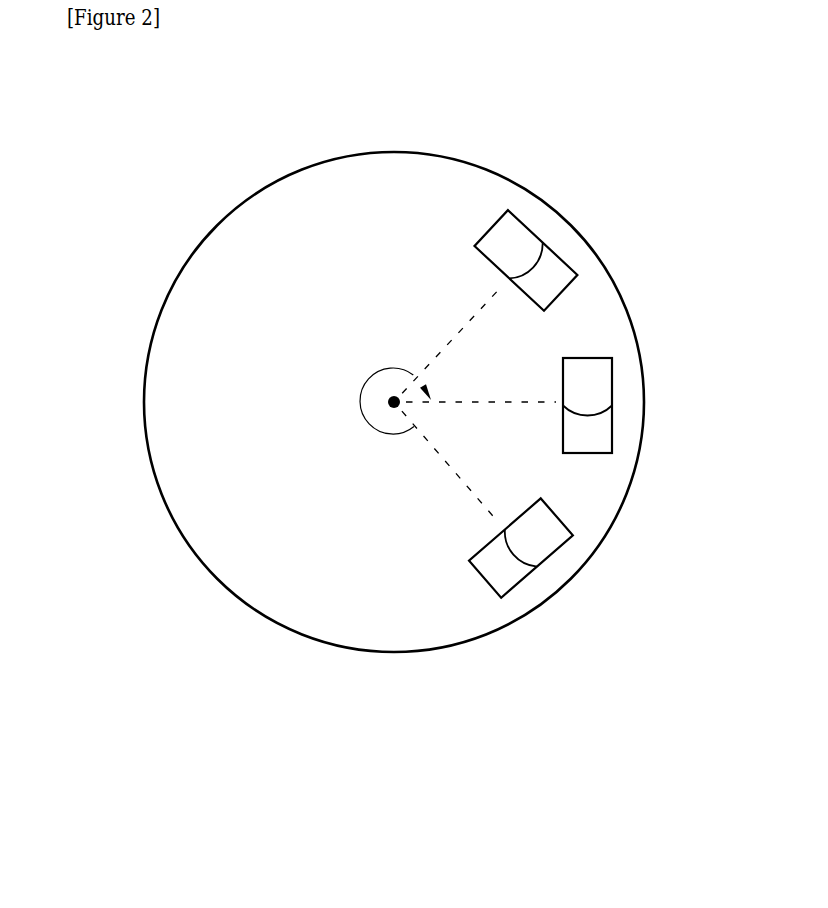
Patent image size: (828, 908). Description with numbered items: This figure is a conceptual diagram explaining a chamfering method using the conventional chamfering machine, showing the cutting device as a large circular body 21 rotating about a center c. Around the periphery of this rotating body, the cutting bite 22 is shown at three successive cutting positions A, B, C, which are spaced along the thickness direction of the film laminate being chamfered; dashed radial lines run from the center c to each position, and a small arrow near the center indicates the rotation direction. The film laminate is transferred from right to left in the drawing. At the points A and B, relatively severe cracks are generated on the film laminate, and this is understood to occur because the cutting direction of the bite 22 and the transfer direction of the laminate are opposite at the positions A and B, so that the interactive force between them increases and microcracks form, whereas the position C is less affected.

The rotary table 21 is at (187, 262).
The cutting bite 22 is at (540, 191).
The cutting position A is at (525, 227).
The cutting position B is at (622, 405).
The cutting position C is at (528, 562).
The rotation center c is at (394, 402).